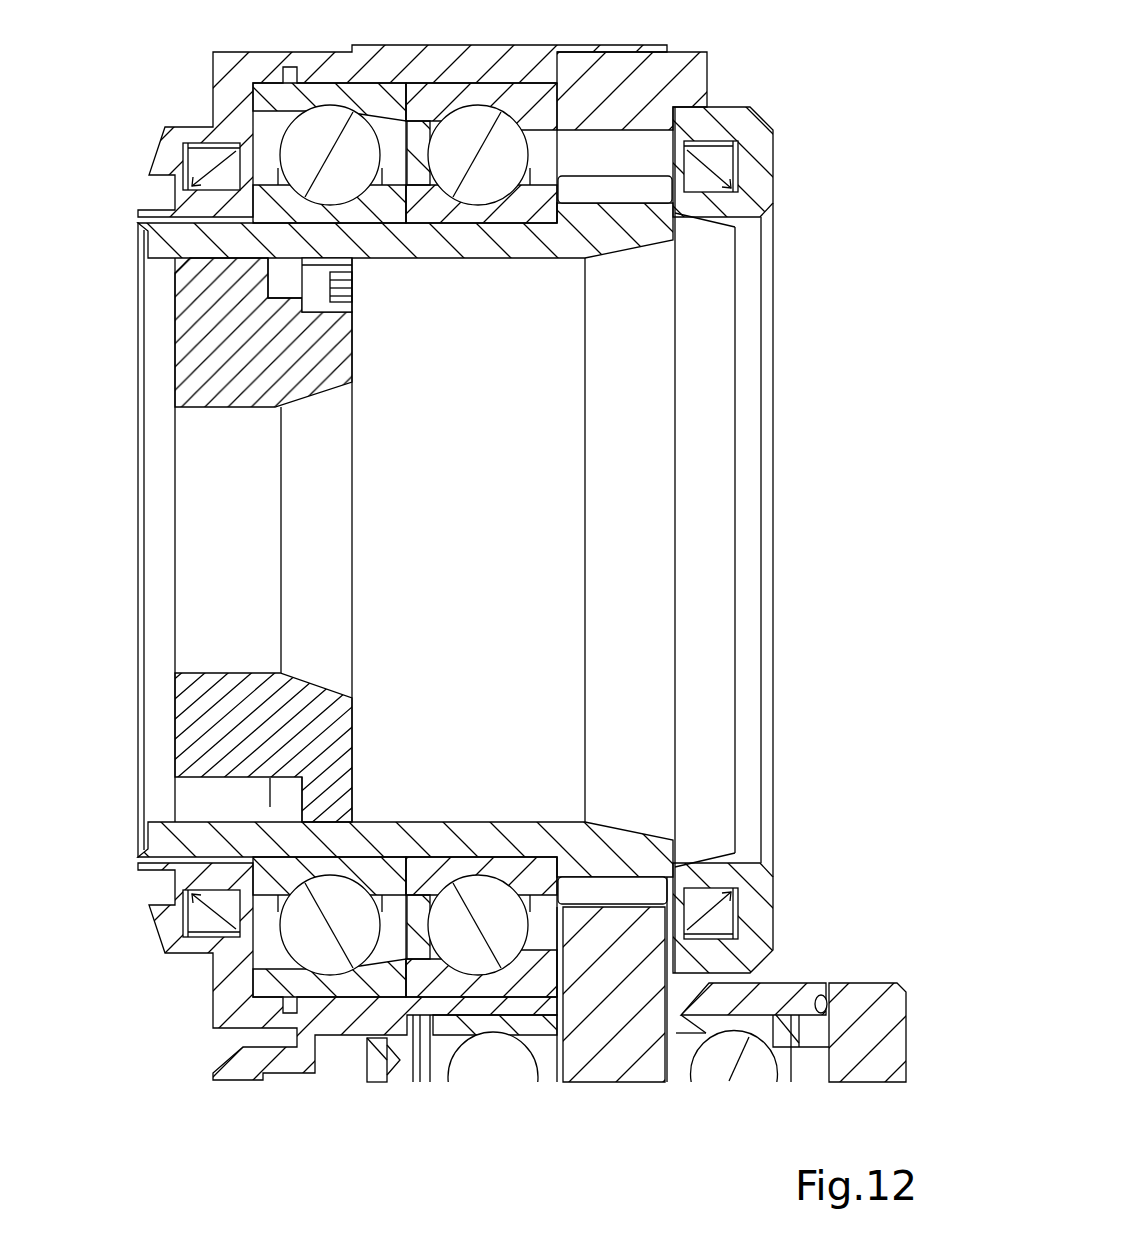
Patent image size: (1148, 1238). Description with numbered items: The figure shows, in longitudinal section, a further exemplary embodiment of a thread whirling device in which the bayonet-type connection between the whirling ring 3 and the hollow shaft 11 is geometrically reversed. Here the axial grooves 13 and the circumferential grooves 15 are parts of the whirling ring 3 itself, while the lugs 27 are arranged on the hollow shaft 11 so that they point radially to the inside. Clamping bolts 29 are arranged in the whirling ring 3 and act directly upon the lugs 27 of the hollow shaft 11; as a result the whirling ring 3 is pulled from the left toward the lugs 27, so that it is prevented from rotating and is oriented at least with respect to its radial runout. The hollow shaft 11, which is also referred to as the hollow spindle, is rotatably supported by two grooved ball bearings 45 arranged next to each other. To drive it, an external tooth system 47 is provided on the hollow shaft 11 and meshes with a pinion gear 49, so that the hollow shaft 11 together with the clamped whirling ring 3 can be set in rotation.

The whirling ring 3 is at (195, 693).
The hollow shaft 11 is at (149, 242).
The axial grooves 13 is at (207, 780).
The circumferential grooves 15 is at (300, 779).
The lugs 27 is at (278, 288).
The clamping bolts 29 is at (325, 303).
The grooved ball bearings 45 is at (486, 962).
The external tooth system 47 is at (667, 195).
The pinion gear 49 is at (631, 1046).